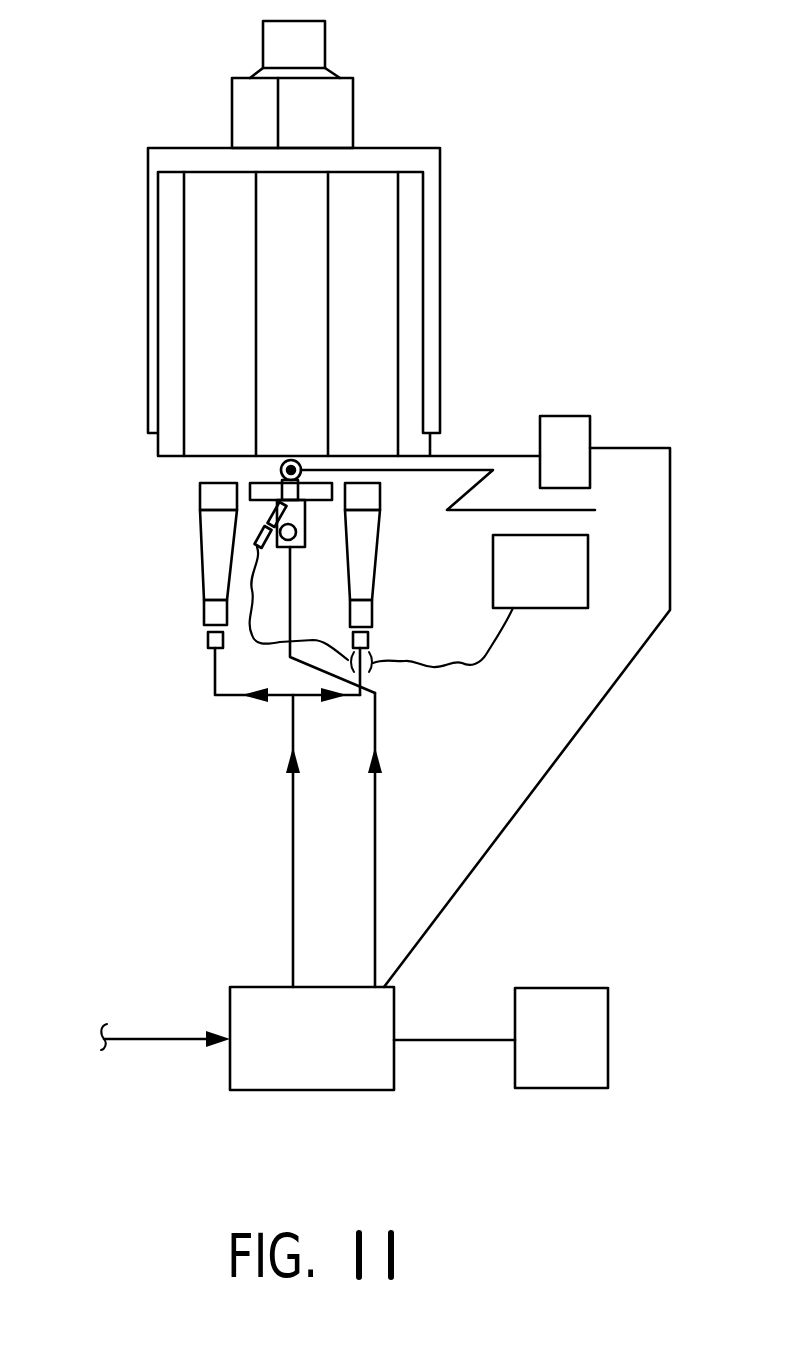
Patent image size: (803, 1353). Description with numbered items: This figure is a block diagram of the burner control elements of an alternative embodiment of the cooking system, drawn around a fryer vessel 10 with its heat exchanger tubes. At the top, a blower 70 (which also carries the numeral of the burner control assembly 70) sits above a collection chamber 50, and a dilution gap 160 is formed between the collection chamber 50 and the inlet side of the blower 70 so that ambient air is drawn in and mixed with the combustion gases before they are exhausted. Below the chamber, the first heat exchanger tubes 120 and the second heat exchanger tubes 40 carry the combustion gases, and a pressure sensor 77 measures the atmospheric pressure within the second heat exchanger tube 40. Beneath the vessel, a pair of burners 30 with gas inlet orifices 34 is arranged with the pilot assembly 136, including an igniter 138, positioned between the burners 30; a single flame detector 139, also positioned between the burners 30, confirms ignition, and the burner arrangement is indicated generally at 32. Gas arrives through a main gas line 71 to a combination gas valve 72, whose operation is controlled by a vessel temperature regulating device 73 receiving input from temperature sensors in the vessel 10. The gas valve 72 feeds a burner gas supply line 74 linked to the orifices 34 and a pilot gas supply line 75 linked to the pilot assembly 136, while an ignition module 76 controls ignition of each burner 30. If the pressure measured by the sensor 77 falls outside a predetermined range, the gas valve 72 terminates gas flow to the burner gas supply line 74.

The fryer vessel 10 is at (409, 365).
The burner 30 is at (200, 487).
The nozzle assembly 32 is at (182, 468).
The gas inlet orifice 34 is at (213, 648).
The second heat exchanger tube 40 is at (148, 342).
The collection chamber 50 is at (375, 163).
The burner control assembly 70 is at (325, 47).
The main gas line 71 is at (157, 1040).
The combination gas valve 72 is at (382, 1090).
The vessel temperature regulating device 73 is at (608, 1025).
The burner gas supply line 74 is at (293, 855).
The pilot gas supply line 75 is at (375, 855).
The ignition module 76 is at (548, 608).
The pressure sensor 77 is at (560, 416).
The first heat exchanger tube 120 is at (310, 282).
The pilot assembly 136 is at (273, 507).
The igniter 138 is at (257, 540).
The flame detector 139 is at (473, 495).
The dilution gap 160 is at (222, 145).